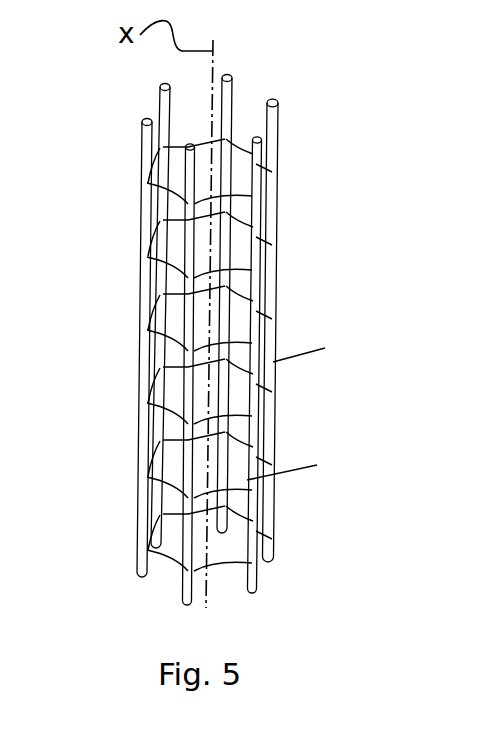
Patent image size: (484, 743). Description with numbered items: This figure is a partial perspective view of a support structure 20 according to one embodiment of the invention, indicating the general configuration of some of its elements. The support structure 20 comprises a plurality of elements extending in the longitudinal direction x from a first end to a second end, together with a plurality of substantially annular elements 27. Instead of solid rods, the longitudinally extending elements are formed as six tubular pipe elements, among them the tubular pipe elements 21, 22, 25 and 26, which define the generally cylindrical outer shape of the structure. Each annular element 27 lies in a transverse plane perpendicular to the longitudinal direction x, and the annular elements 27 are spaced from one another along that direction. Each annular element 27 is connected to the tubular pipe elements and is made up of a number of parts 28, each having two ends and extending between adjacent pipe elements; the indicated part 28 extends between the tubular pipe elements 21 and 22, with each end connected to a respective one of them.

The support structure 20 is at (131, 184).
The tubular pipe element 21 is at (145, 273).
The tubular pipe element 22 is at (195, 366).
The tubular pipe element 25 is at (231, 80).
The tubular pipe element 26 is at (165, 102).
The annular element 27 is at (158, 459).
The part 28 is at (173, 487).